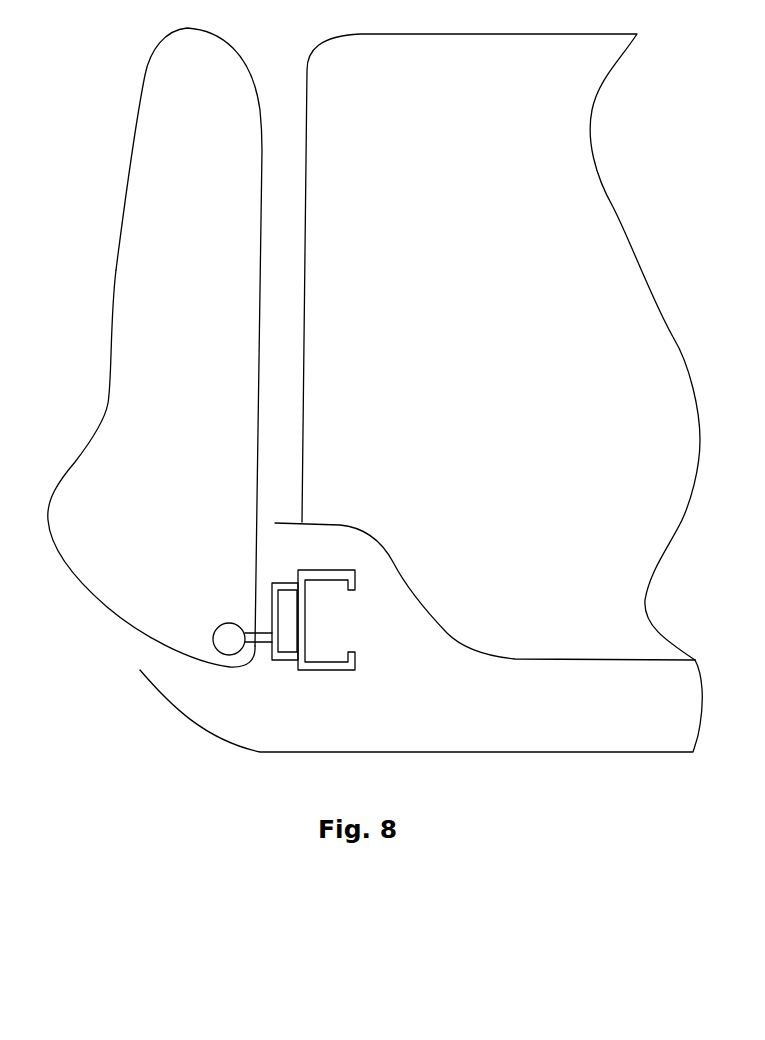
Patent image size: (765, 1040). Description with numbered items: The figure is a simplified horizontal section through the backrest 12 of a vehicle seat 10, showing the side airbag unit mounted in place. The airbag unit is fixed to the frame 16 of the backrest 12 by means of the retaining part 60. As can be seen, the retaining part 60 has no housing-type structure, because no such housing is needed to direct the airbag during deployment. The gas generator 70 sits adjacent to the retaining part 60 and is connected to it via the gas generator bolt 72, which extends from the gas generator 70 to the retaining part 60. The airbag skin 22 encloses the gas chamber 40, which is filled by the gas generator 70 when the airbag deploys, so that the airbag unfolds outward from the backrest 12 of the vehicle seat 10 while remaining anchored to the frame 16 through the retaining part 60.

The vehicle seat 10 is at (587, 242).
The backrest 12 is at (588, 728).
The frame 16 is at (352, 668).
The airbag skin 22 is at (123, 233).
The gas chamber 40 is at (165, 335).
The retaining part 60 is at (285, 657).
The gas generator 70 is at (230, 640).
The gas generator bolt 72 is at (262, 638).